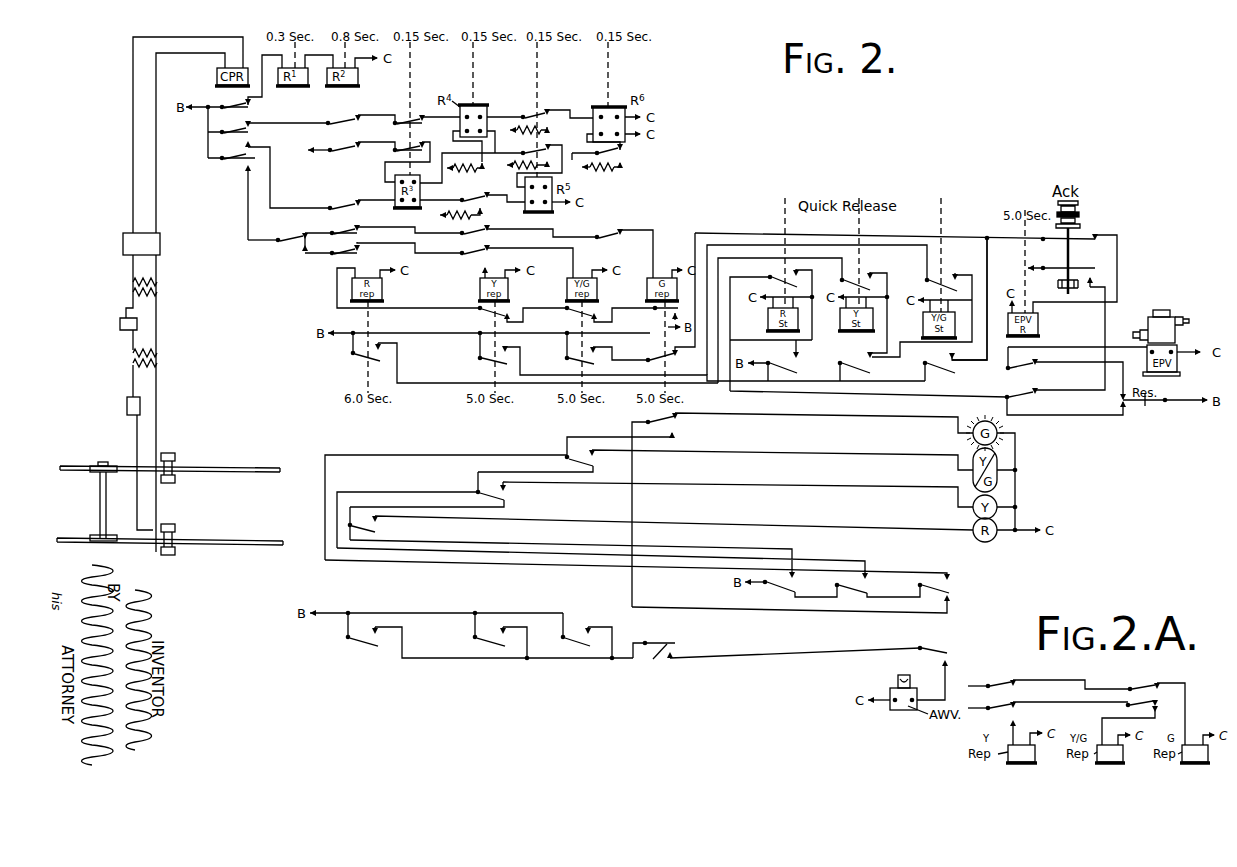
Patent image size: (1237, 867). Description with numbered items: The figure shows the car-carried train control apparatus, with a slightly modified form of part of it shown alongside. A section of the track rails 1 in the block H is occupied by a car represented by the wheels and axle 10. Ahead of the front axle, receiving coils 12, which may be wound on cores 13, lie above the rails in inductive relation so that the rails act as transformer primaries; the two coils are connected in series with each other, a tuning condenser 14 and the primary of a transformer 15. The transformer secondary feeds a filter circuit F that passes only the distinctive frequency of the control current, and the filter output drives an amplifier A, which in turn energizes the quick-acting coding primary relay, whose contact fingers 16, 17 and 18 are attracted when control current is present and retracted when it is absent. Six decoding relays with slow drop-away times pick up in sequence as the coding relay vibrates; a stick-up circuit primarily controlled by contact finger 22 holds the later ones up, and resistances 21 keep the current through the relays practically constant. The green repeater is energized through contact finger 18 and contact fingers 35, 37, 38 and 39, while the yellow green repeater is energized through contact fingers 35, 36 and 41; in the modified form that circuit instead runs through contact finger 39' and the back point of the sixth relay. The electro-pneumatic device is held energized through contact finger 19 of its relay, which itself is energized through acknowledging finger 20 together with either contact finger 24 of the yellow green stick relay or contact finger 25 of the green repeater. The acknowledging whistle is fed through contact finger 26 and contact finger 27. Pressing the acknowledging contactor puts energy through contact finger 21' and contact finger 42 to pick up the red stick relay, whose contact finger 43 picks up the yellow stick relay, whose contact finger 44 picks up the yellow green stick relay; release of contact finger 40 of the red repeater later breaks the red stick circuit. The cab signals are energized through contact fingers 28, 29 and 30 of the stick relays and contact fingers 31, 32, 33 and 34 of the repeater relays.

In FIG. 2, the track rails 1 is at (238, 469).
In FIG. 2, the wheels and axle 10 is at (100, 510).
In FIG. 2, the receiving coils 12 is at (178, 464).
In FIG. 2, the cores 13 is at (168, 453).
In FIG. 2, the tuning condenser 14 is at (127, 404).
In FIG. 2, the transformer 15 is at (157, 360).
In FIG. 2, the contact finger 16 is at (233, 110).
In FIG. 2, the contact finger 17 is at (233, 136).
In FIG. 2, the contact finger 18 is at (233, 162).
In FIG. 2, the contact finger 19 is at (1038, 368).
In FIG. 2, the contact finger 20 is at (1082, 241).
In FIG. 2, the resistances 21 is at (528, 178).
In FIG. 2, the contact finger 21' is at (1067, 261).
In FIG. 2, the contact finger 22 is at (355, 153).
In FIG. 2, the contact finger 24 is at (944, 370).
In FIG. 2, the contact finger 25 is at (663, 357).
In FIG. 2, the contact finger 26 is at (949, 651).
In FIG. 2, the contact finger 27 is at (660, 653).
In FIG. 2, the contact finger 28 is at (780, 590).
In FIG. 2, the contact finger 29 is at (856, 597).
In FIG. 2, the contact finger 30 is at (938, 598).
In FIG. 2, the contact finger 31 is at (378, 530).
In FIG. 2, the contact finger 32 is at (507, 497).
In FIG. 2, the contact finger 33 is at (649, 498).
In FIG. 2, the contact finger 34 is at (681, 423).
In FIG. 2, the contact finger 35 is at (290, 244).
In FIG. 2, the contact finger 36 is at (333, 257).
In FIG. 2, the contact finger 37 is at (330, 231).
In FIG. 2, the contact finger 38 is at (486, 234).
In FIG. 2A, the contact finger 38 is at (1003, 686).
In FIG. 2, the contact finger 39 is at (624, 245).
In FIG. 2A, the contact finger 39 is at (1156, 703).
In FIG. 2A, the contact finger 39' is at (1143, 717).
In FIG. 2, the contact finger 40 is at (360, 356).
In FIG. 2, the contact finger 41 is at (485, 253).
In FIG. 2A, the contact finger 41 is at (1010, 712).
In FIG. 2, the contact finger 42 is at (1020, 396).
In FIG. 2, the contact finger 43 is at (797, 374).
In FIG. 2, the contact finger 44 is at (870, 375).
In FIG. 2, the amplifier A is at (141, 244).
In FIG. 2, the filter circuit F is at (157, 320).
In FIG. 2, the block H is at (196, 511).